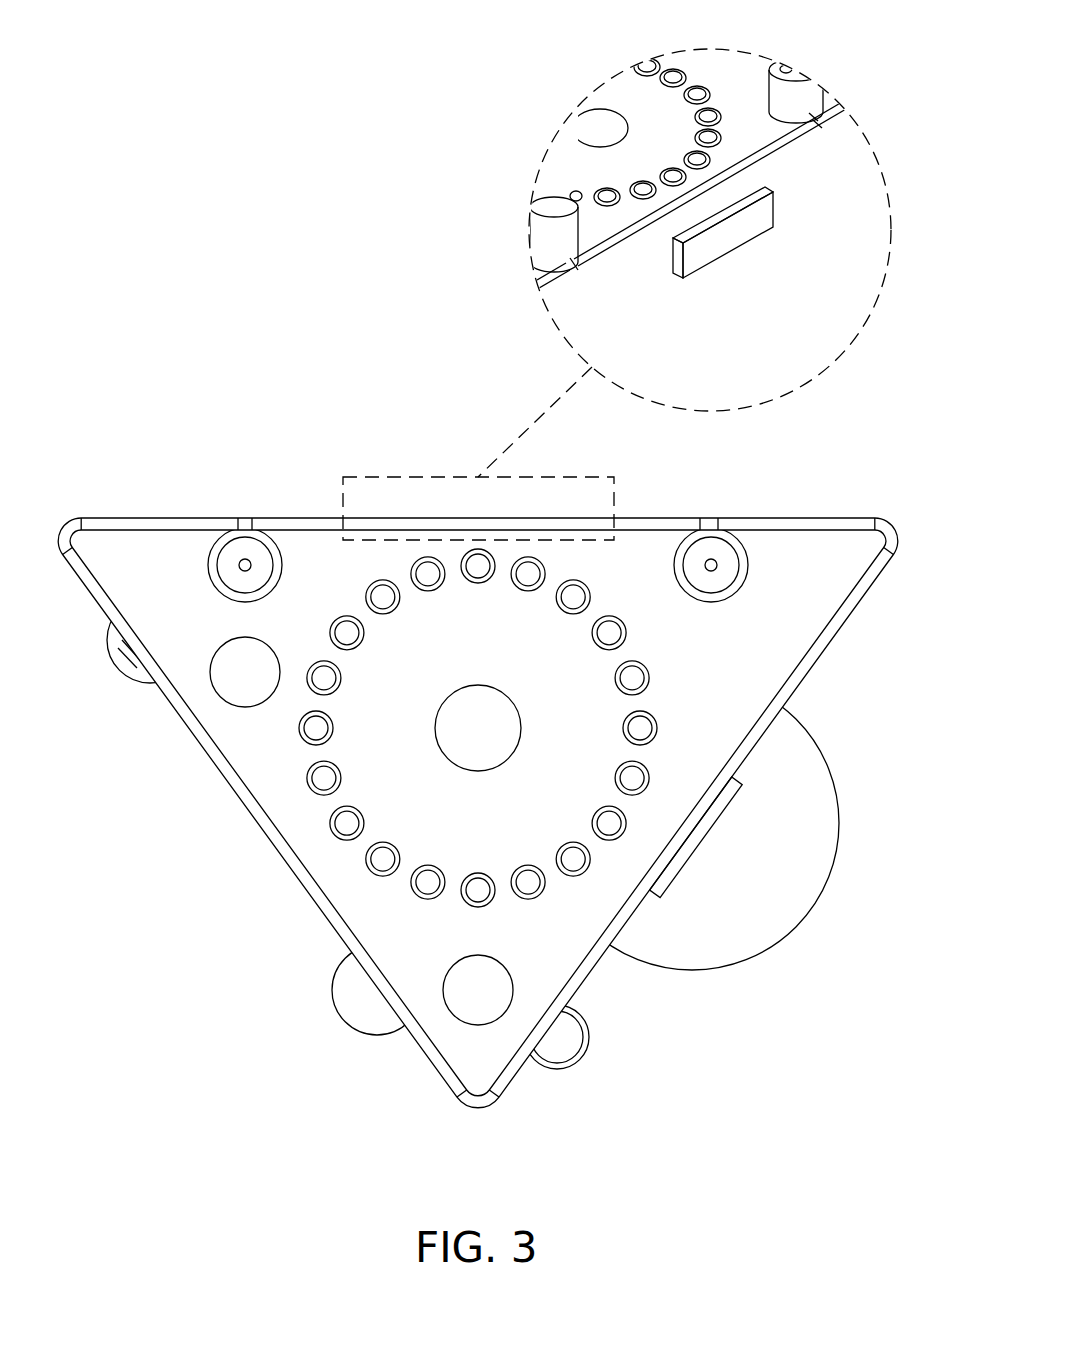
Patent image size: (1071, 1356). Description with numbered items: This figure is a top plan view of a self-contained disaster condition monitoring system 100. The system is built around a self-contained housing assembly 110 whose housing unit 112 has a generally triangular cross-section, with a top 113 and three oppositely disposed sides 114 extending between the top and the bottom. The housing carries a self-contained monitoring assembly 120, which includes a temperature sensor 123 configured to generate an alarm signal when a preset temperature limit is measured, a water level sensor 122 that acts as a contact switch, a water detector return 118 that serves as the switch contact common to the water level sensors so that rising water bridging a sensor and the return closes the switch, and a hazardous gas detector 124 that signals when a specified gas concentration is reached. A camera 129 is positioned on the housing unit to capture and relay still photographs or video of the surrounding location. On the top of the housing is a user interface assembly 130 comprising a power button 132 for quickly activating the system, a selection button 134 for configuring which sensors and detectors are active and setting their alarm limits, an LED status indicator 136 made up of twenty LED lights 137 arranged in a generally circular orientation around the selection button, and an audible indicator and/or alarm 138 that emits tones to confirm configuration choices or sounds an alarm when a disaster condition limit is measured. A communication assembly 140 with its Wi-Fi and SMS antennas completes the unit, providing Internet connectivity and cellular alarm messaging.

The self-contained disaster condition monitoring system 100 is at (363, 378).
The self-contained housing assembly 110 is at (847, 653).
The housing unit 112 is at (893, 540).
The top 113 is at (775, 628).
The sides 114 is at (147, 518).
The water detector return 118 is at (578, 1063).
The self-contained monitoring assembly 120 is at (763, 975).
The water level sensor 122 is at (350, 1025).
The temperature sensor 123 is at (745, 783).
The hazardous gas detector 124 is at (830, 880).
The camera 129 is at (228, 698).
The user interface assembly 130 is at (278, 918).
The power button 132 is at (727, 228).
The selection button 134 is at (490, 770).
The LED status indicator 136 is at (298, 793).
The LED lights 137 is at (333, 728).
The audible indicator and/or alarm 138 is at (505, 960).
The communication assembly 140 is at (238, 476).